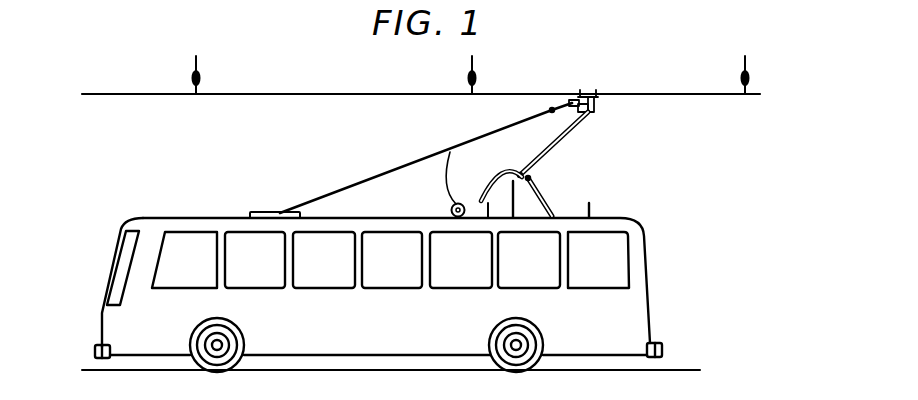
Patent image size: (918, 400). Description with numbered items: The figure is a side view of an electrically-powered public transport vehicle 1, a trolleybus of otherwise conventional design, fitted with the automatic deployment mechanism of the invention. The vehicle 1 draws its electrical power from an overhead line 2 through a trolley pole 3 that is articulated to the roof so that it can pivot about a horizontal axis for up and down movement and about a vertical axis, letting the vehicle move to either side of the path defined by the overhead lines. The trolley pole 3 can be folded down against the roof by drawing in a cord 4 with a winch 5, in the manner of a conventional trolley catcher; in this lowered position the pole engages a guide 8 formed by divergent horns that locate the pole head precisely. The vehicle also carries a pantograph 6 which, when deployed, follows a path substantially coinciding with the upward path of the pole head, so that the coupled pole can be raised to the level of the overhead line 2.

The electrically-powered public transport vehicle 1 is at (393, 335).
The overhead line 2 is at (692, 96).
The trolley pole 3 is at (375, 173).
The cord 4 is at (452, 185).
The winch 5 is at (449, 208).
The pantograph 6 is at (560, 171).
The guide 8 is at (593, 208).